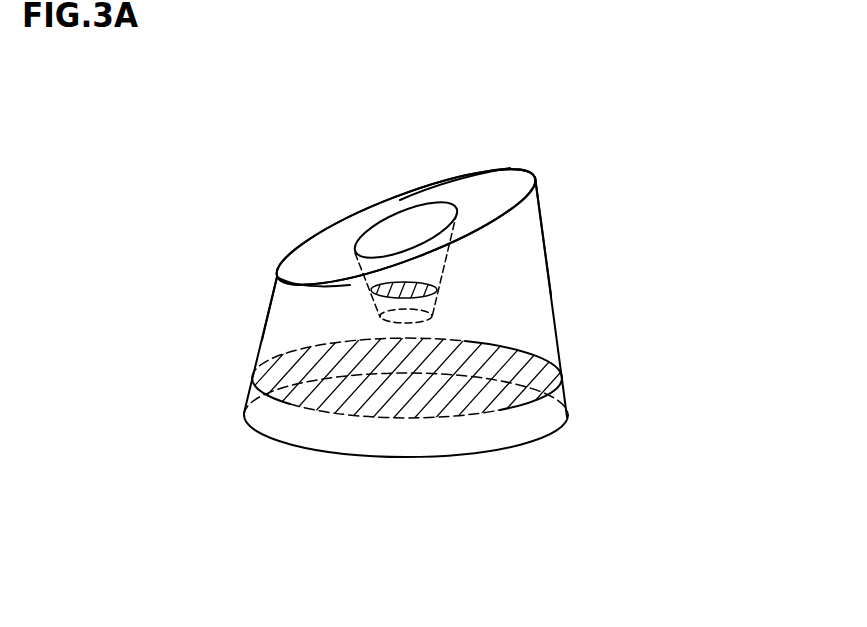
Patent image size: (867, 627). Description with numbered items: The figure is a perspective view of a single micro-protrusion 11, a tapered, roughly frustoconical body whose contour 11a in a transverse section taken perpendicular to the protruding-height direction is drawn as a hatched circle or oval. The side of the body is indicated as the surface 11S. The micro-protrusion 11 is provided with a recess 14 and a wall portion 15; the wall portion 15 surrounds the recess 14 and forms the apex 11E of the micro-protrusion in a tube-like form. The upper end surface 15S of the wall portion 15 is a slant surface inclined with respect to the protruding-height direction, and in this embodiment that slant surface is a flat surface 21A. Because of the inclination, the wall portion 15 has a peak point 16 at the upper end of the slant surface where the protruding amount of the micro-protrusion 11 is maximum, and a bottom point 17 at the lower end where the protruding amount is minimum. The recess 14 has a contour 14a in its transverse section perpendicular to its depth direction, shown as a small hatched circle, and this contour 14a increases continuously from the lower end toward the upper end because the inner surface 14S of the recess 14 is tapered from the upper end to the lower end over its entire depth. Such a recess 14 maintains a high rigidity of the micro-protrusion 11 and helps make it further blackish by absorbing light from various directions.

The micro-protrusion 11 is at (582, 202).
The apex of the micro-protrusion 11E is at (258, 243).
The side surface of body 11S is at (267, 318).
The contour of transverse section of the micro-protrusion 11a is at (462, 340).
The recess 14 is at (410, 228).
The inner surface of the recess 14S is at (373, 250).
The contour of transverse section of the recess 14a is at (440, 278).
The wall portion 15 is at (320, 260).
The upper end surface of the wall portion 15S is at (505, 177).
The peak point 16 is at (535, 174).
The bottom point 17 is at (277, 276).
The flat surface 21A is at (462, 188).